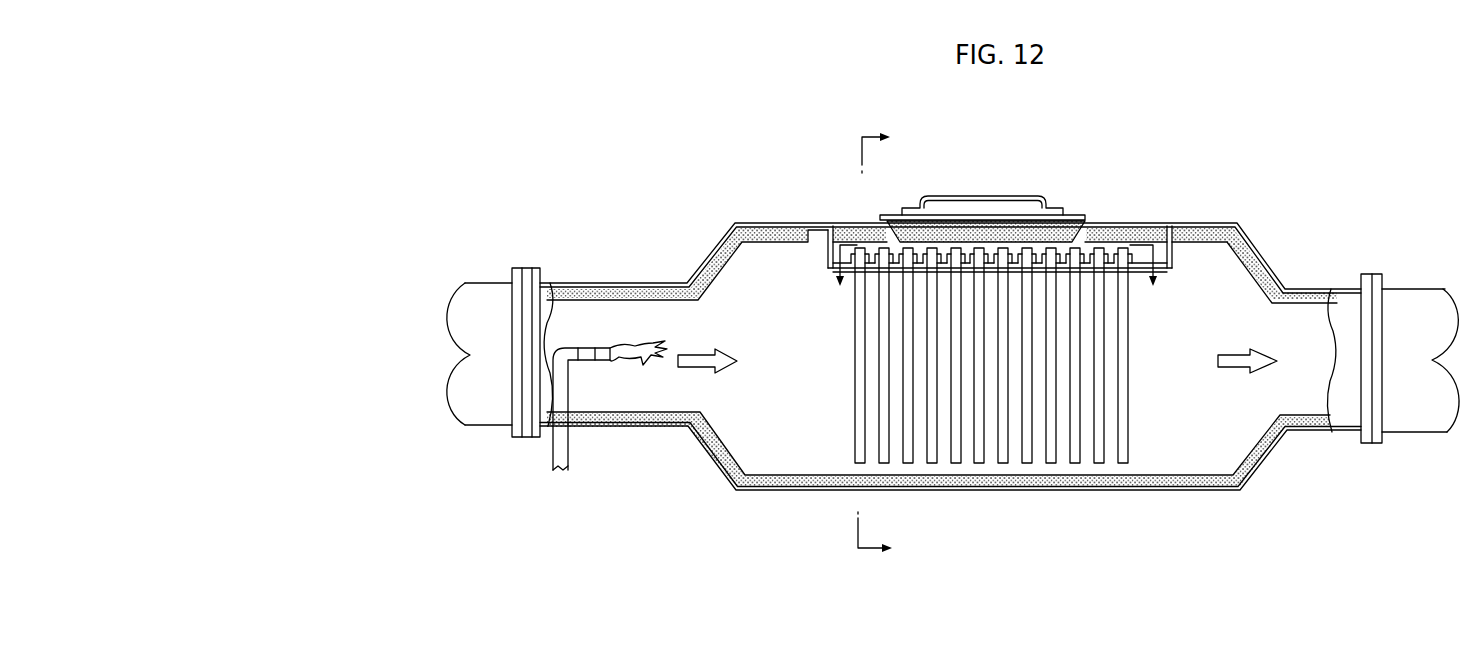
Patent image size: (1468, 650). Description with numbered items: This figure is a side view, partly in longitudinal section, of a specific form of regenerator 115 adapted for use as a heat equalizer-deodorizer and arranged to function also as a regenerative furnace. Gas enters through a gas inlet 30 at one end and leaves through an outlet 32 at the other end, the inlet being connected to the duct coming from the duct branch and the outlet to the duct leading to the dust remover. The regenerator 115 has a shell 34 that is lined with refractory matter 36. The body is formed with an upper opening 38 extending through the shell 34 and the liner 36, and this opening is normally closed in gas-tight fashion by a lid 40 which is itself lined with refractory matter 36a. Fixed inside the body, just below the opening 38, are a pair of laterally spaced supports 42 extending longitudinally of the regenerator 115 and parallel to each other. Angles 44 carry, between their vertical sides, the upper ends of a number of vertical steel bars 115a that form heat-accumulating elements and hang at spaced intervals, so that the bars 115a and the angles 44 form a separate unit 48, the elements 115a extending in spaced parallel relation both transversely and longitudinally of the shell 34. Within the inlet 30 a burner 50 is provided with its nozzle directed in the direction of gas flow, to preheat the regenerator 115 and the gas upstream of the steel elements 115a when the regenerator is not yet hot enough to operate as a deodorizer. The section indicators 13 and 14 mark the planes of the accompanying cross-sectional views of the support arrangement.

The gas inlet 30 is at (653, 282).
The outlet 32 is at (1320, 289).
The shell 34 is at (813, 222).
The refractory matter 36 is at (765, 238).
The refractory matter 36a is at (900, 230).
The upper opening 38 is at (1072, 215).
The lid 40 is at (991, 215).
The supports 42 is at (1167, 270).
The angles 44 is at (1132, 256).
The separate unit 48 is at (959, 355).
The burner 50 is at (598, 358).
The regenerator 115 is at (1121, 197).
The vertical steel bars 115a is at (856, 356).
The section line 13- 13 is at (997, 280).
The section line 14- 14 is at (890, 344).